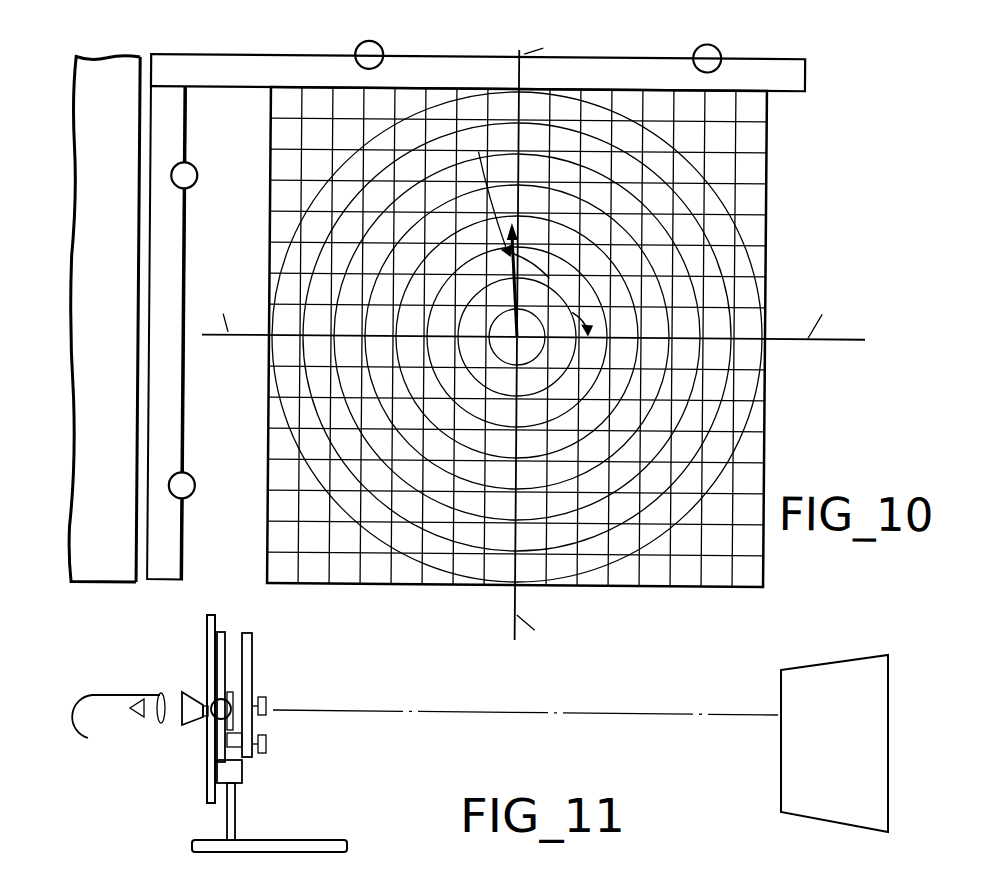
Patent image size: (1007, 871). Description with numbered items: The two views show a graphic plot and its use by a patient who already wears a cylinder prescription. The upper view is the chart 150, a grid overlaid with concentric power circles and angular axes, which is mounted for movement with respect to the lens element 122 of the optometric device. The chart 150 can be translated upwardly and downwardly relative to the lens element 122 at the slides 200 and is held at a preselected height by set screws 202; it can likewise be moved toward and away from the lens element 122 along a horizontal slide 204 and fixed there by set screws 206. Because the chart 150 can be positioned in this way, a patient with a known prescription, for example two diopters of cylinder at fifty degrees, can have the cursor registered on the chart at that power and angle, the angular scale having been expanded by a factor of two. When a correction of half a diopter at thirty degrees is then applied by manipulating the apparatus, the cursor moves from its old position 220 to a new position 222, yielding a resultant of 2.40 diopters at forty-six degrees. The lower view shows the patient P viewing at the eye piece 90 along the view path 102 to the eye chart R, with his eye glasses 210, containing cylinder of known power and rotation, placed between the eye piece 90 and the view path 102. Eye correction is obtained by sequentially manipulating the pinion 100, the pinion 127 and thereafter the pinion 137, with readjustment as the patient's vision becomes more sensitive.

In FIG. 10, the lens element 122 is at (103, 80).
In FIG. 10, the horizontal slide 204 is at (248, 66).
In FIG. 10, the set screws 206 is at (374, 55).
In FIG. 10, the set screws 202 is at (190, 178).
In FIG. 10, the slides 200 is at (186, 382).
In FIG. 10, the chart 150 is at (767, 233).
In FIG. 10, the old position 220 is at (504, 246).
In FIG. 10, the new position 222 is at (516, 226).
In FIG. 11, the eye glasses 210 is at (92, 694).
In FIG. 11, the patient P is at (132, 727).
In FIG. 11, the eye piece 90 is at (185, 690).
In FIG. 11, the pinion 100 is at (229, 698).
In FIG. 11, the pinion 127 is at (266, 697).
In FIG. 11, the pinion 137 is at (266, 750).
In FIG. 11, the view path 102 is at (418, 703).
In FIG. 11, the eye chart R is at (772, 761).